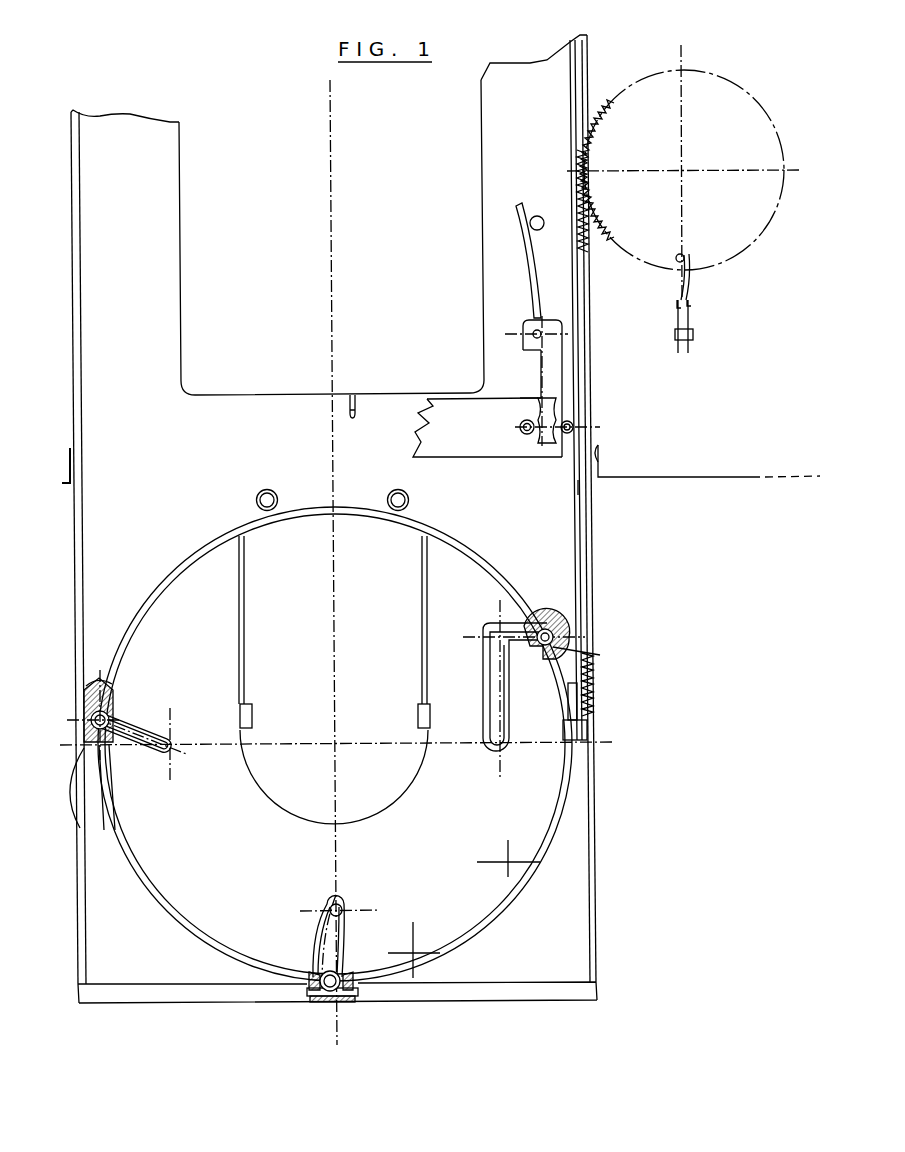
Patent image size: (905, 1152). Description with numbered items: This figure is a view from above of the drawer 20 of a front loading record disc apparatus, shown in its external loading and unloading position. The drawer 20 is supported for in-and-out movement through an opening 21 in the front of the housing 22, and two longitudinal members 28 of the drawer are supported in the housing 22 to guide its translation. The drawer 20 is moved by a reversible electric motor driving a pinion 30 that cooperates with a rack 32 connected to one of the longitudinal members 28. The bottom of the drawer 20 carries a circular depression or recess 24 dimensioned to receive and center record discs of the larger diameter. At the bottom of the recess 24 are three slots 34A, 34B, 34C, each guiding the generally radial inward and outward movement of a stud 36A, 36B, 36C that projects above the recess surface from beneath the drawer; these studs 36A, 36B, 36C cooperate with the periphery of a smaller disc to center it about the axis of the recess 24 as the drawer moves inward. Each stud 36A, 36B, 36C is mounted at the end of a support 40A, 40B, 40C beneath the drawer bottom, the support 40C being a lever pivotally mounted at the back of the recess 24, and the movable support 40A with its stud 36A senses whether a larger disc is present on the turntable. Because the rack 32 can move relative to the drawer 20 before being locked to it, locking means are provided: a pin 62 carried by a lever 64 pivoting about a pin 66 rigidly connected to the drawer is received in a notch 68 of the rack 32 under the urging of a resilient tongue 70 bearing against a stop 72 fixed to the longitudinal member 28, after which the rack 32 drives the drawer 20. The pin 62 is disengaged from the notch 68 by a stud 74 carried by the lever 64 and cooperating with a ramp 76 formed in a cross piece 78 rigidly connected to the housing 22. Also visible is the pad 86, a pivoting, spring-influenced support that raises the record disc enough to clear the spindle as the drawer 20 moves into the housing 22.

The drawer 20 is at (568, 940).
The opening 21 is at (611, 457).
The housing 22 is at (62, 485).
The circular depression or recess 24 is at (446, 908).
The longitudinal members 28 is at (105, 130).
The pinion 30 is at (722, 238).
The rack 32 is at (582, 573).
The slot 34A is at (493, 626).
The slot 34B is at (173, 757).
The slot 34C is at (355, 898).
The stud 36A is at (560, 628).
The stud 36B is at (90, 815).
The stud 36C is at (340, 1000).
The support 40A is at (527, 612).
The support 40B is at (100, 676).
The support 40C is at (318, 985).
The pin 62 is at (575, 427).
The lever 64 is at (553, 377).
The pin 66 is at (540, 333).
The notch 68 is at (578, 487).
The resilient tongue 70 is at (518, 207).
The stop 72 is at (539, 219).
The stud 74 is at (533, 433).
The ramp 76 is at (535, 407).
The cross piece 78 is at (468, 433).
The pad 86 is at (252, 705).